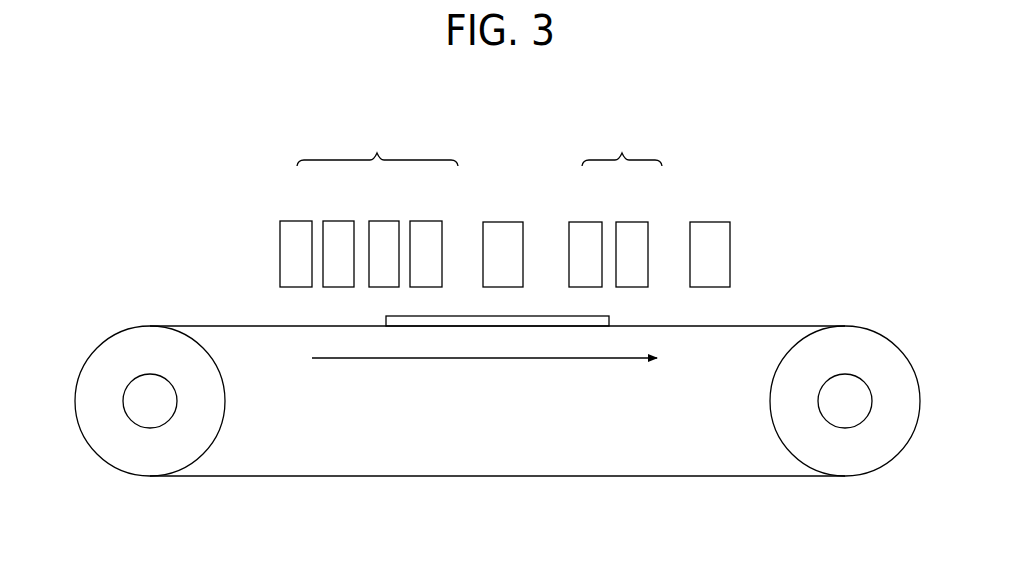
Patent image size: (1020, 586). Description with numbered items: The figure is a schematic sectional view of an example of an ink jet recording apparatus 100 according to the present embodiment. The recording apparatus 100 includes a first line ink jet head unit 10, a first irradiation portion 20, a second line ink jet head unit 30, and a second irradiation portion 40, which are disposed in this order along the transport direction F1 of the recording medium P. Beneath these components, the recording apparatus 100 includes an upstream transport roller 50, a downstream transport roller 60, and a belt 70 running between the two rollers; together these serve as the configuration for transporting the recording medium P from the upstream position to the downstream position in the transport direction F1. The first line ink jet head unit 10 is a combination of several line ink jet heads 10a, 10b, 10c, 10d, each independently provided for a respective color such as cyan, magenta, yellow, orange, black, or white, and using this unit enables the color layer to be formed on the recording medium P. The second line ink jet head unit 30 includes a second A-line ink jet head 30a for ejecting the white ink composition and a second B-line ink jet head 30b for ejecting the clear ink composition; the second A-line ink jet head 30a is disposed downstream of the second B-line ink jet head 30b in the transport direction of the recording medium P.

The recording apparatus 100 is at (163, 148).
The first line ink jet head unit 10 is at (377, 145).
The line ink jet head 10a is at (290, 221).
The line ink jet head 10b is at (334, 221).
The line ink jet head 10c is at (379, 221).
The line ink jet head 10d is at (423, 221).
The first irradiation portion 20 is at (501, 222).
The second line ink jet head unit 30 is at (622, 145).
The second A-line ink jet head 30a is at (631, 222).
The second B-line ink jet head 30b is at (586, 222).
The second irradiation portion 40 is at (710, 222).
The upstream transport roller 50 is at (92, 447).
The downstream transport roller 60 is at (905, 447).
The belt 70 is at (732, 477).
The recording medium P is at (612, 316).
The transport direction F1 is at (503, 358).